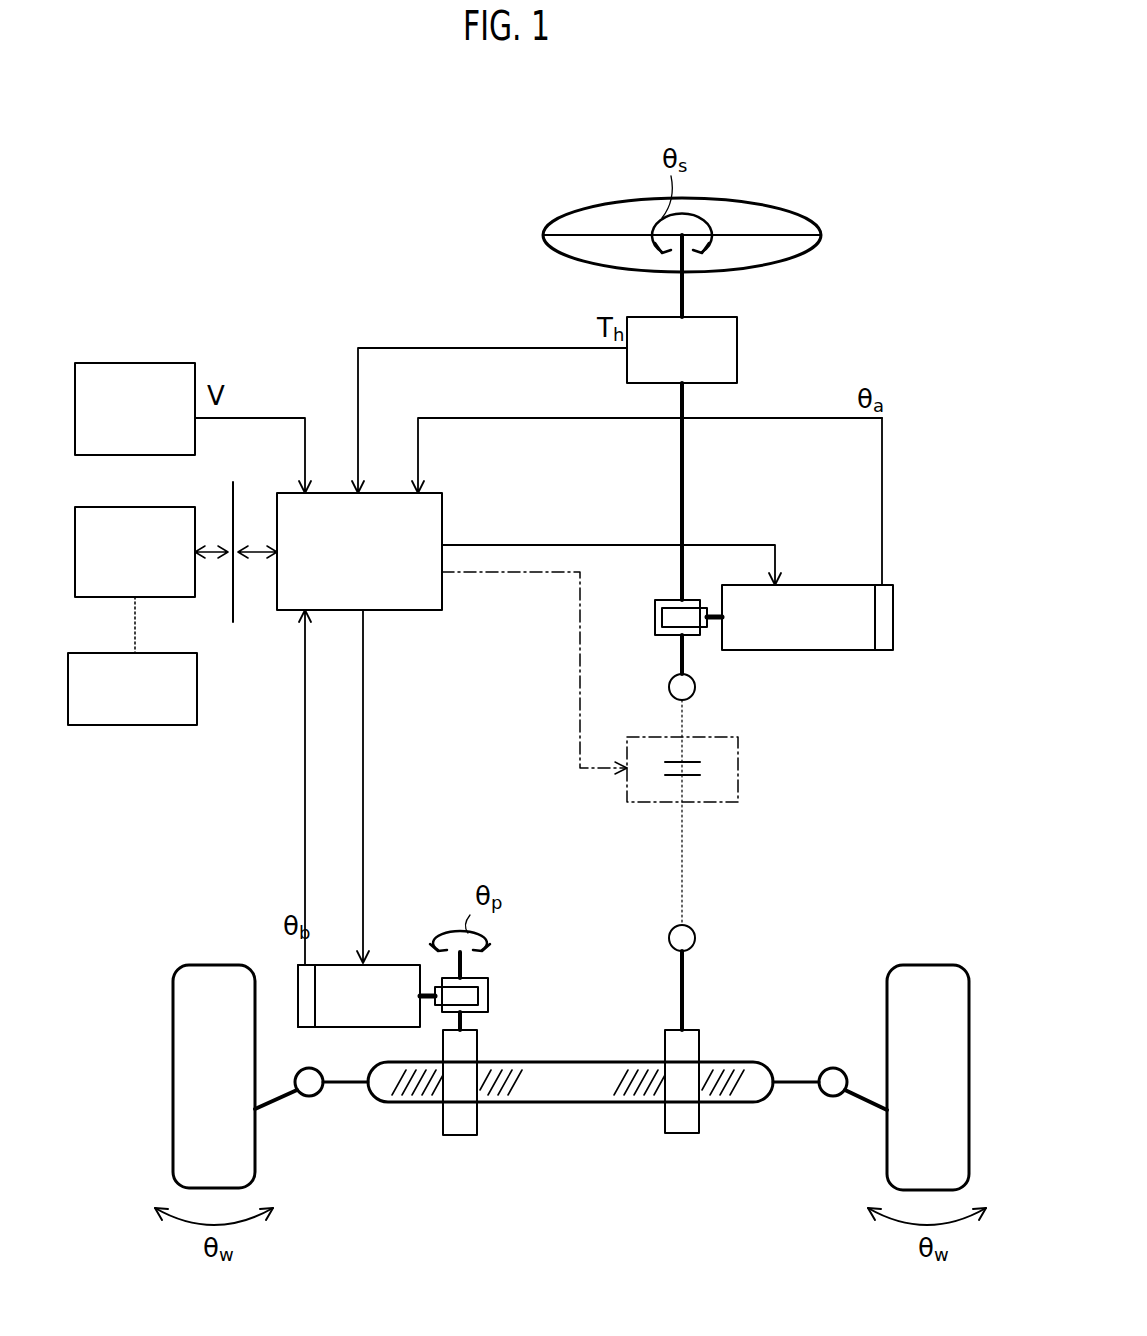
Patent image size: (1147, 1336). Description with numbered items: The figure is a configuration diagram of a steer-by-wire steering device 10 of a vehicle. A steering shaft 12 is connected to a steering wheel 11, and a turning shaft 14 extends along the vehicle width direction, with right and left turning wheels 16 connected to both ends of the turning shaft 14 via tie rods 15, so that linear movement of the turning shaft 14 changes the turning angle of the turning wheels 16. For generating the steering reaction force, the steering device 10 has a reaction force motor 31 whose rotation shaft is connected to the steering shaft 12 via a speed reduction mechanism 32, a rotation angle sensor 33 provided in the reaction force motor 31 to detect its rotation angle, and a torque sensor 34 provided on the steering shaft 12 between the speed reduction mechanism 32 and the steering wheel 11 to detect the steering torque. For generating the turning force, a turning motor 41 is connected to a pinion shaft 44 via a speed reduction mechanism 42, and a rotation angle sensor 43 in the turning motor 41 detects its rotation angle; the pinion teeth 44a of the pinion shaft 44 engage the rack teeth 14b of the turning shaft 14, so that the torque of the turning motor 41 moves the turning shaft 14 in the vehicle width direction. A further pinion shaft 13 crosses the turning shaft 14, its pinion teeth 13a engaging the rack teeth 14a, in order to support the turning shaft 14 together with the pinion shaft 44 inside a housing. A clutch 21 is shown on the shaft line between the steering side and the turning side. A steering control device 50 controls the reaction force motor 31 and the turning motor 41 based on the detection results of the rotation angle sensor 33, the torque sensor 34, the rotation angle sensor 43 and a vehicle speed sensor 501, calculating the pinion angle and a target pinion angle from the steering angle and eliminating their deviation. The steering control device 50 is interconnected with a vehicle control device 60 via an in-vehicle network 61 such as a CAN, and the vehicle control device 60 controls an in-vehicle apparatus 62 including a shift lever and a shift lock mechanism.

The steering device 10 is at (852, 197).
The steering wheel 11 is at (766, 200).
The steering shaft 12 is at (685, 291).
The pinion shaft 13 is at (680, 996).
The pinion teeth 13a is at (684, 1133).
The turning shaft 14 is at (570, 1111).
The rack teeth 14a is at (640, 1100).
The rack teeth 14b is at (497, 1098).
The tie rod 15 is at (340, 1084).
The turning wheel 16 is at (256, 1157).
The clutch 21 is at (738, 775).
The reaction force motor 31 is at (807, 652).
The speed reduction mechanism 32 is at (648, 602).
The rotation angle sensor 33 is at (881, 652).
The torque sensor 34 is at (737, 348).
The turning motor 41 is at (399, 965).
The speed reduction mechanism 42 is at (502, 1010).
The rotation angle sensor 43 is at (298, 1012).
The pinion shaft 44 is at (466, 960).
The pinion teeth 44a is at (460, 1135).
The steering control device 50 is at (438, 612).
The vehicle speed sensor 501 is at (104, 363).
The vehicle control device 60 is at (102, 507).
The in-vehicle network 61 is at (235, 496).
The in-vehicle apparatus 62 is at (103, 653).